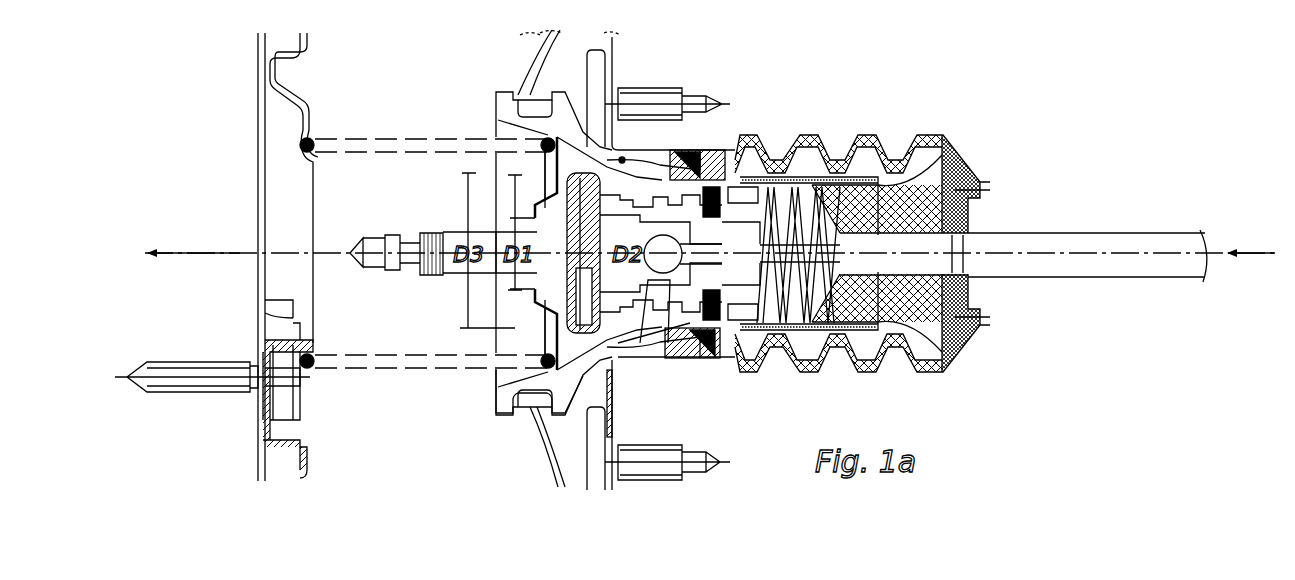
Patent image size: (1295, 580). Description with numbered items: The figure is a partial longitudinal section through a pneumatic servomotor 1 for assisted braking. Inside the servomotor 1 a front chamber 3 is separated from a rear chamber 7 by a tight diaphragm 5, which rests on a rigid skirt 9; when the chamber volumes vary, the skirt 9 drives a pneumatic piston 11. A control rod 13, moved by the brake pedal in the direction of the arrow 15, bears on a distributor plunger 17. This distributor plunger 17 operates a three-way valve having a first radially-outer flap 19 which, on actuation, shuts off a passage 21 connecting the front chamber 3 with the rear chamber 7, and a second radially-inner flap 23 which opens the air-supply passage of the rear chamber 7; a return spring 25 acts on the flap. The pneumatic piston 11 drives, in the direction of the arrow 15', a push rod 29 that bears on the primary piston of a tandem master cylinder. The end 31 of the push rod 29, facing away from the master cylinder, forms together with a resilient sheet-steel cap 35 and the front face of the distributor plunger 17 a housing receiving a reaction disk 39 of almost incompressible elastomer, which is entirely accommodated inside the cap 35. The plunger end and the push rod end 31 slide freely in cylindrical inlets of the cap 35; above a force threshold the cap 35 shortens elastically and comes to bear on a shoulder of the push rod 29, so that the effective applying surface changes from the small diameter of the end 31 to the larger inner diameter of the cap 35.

The pneumatic servomotor 1 is at (258, 62).
The front chamber 3 is at (405, 93).
The tight diaphragm 5 is at (586, 38).
The rear chamber 7 is at (570, 490).
The rigid skirt 9 is at (540, 64).
The pneumatic piston 11 is at (497, 92).
The control rod 13 is at (1050, 233).
The arrow 15 is at (1251, 232).
The arrow 15' is at (194, 230).
The distributor plunger 17 is at (676, 295).
The first radially-outer flap 19 is at (705, 148).
The passage 21 is at (637, 182).
The second radially-inner flap 23 is at (760, 212).
The return spring 25 is at (790, 365).
The push rod 29 is at (448, 236).
The end of the push rod 31 is at (545, 300).
The cap 35 is at (592, 318).
The reaction disk 39 is at (575, 193).